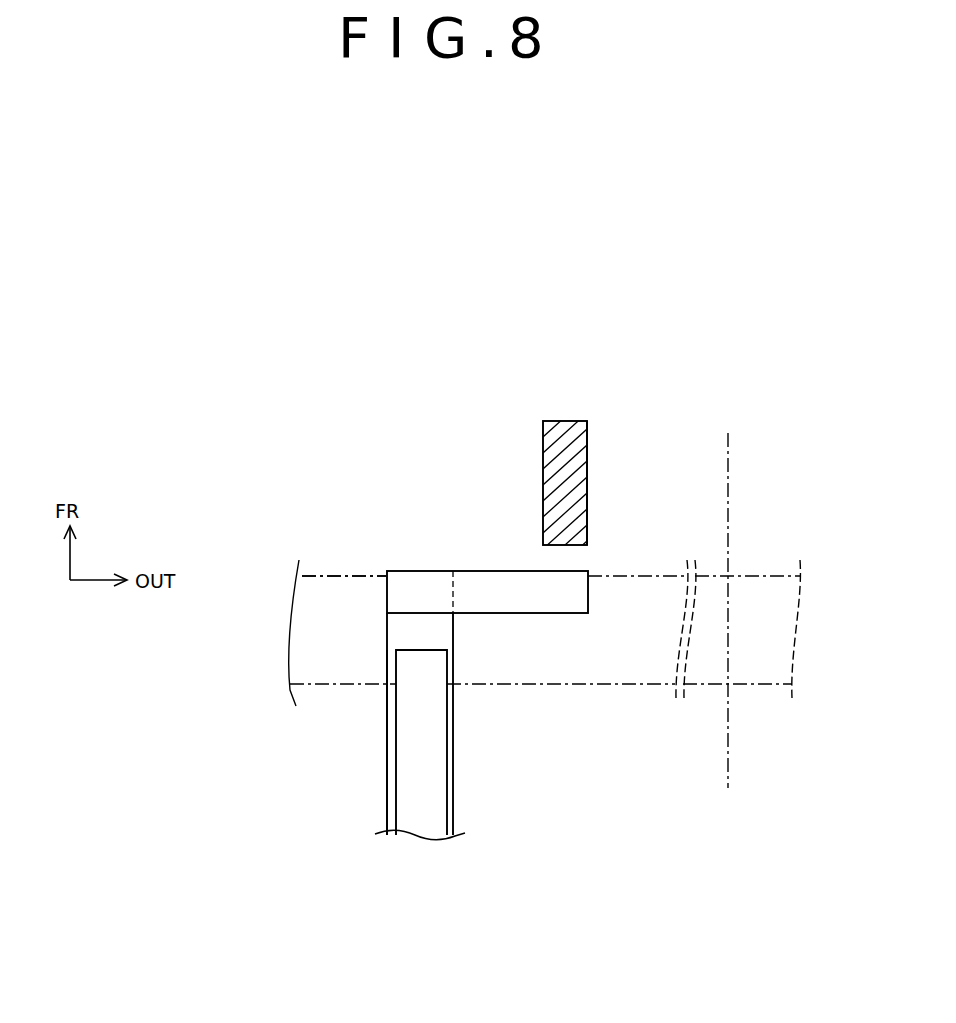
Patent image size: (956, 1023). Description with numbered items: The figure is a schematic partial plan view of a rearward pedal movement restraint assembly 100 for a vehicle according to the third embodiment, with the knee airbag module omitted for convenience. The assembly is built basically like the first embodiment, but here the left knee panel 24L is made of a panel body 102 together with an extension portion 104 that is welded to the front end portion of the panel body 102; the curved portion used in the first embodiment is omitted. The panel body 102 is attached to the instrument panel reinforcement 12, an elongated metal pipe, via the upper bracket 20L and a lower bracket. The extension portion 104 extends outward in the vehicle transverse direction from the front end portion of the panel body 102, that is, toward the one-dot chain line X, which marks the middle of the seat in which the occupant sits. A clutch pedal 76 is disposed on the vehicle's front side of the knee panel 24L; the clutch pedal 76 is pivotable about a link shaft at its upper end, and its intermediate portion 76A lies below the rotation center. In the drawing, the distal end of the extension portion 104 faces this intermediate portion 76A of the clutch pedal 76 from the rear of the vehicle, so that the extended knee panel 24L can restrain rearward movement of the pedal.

The rearward pedal movement restraint assembly 100 is at (449, 450).
The instrument panel reinforcement 12 is at (345, 574).
The extension portion 104 is at (486, 570).
The upper bracket 20L is at (447, 757).
The knee panel 24L is at (386, 737).
The panel body 102 is at (387, 778).
The clutch pedal 76 is at (565, 418).
The intermediate portion 76A is at (588, 473).
The one-dot chain line X is at (728, 477).